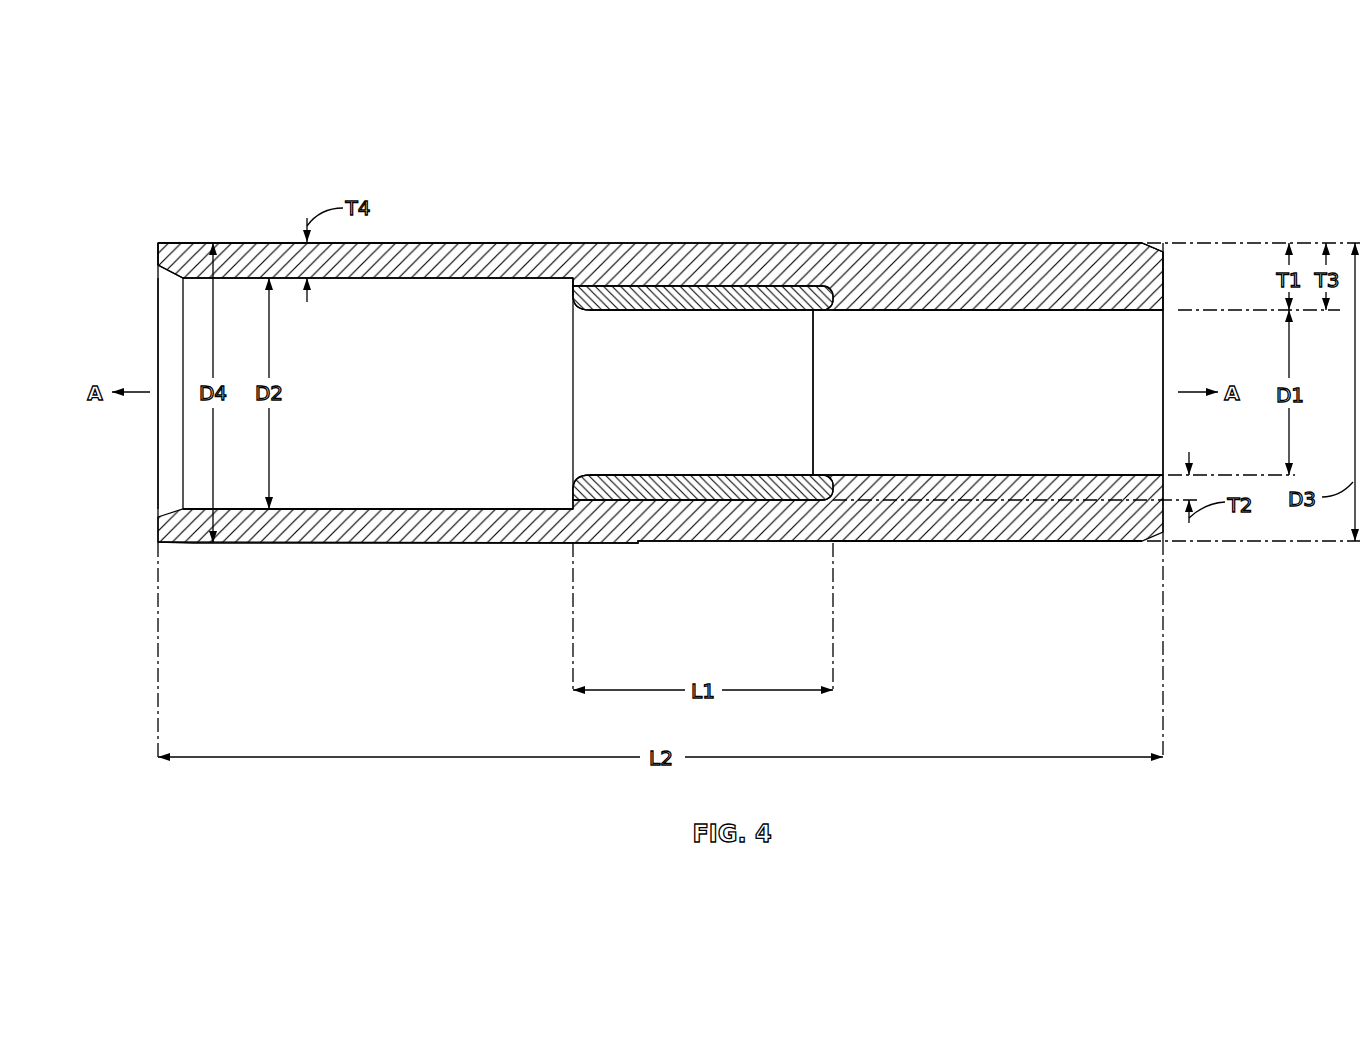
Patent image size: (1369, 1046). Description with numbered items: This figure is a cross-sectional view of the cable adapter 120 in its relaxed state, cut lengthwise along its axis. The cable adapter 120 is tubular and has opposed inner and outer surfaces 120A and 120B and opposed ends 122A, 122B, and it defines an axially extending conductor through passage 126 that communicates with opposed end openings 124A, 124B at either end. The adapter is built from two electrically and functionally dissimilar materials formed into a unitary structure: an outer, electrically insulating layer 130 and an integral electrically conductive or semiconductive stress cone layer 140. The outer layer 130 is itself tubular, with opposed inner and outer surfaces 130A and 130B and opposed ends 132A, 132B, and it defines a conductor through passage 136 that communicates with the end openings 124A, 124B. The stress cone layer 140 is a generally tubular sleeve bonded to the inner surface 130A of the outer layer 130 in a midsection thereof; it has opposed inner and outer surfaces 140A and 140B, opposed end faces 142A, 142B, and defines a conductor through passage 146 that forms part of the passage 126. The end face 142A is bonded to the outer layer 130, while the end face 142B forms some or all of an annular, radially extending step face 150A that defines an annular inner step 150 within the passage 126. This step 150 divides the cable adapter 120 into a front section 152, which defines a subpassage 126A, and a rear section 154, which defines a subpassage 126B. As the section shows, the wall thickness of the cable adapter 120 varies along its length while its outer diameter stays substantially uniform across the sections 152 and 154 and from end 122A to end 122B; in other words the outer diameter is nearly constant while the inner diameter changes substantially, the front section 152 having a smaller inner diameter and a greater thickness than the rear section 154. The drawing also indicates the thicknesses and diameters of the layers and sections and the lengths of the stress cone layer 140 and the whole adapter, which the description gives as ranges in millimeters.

The cable adapter 120 is at (1172, 104).
The inner surface 120A is at (950, 310).
The outer surface 120B is at (912, 243).
The end 122A is at (1165, 280).
The end 122B is at (158, 272).
The end opening 124A is at (1164, 331).
The end opening 124B is at (158, 422).
The conductor through passage 126 is at (457, 480).
The subpassage 126A is at (1059, 393).
The subpassage 126B is at (416, 390).
The outer electrically insulating layer 130 is at (915, 543).
The inner surface 130A is at (1115, 475).
The outer surface 130B is at (1075, 543).
The end 132A is at (1165, 257).
The end 132B is at (158, 247).
The conductor through passage 136 is at (345, 480).
The stress cone layer 140 is at (707, 503).
The inner surface 140A is at (752, 475).
The outer surface 140B is at (750, 502).
The end face 142A is at (835, 483).
The end face 142B is at (573, 296).
The conductor through passage 146 is at (678, 395).
The annular inner step 150 is at (553, 480).
The step face 150A is at (573, 284).
The front section 152 is at (1027, 243).
The rear section 154 is at (407, 243).